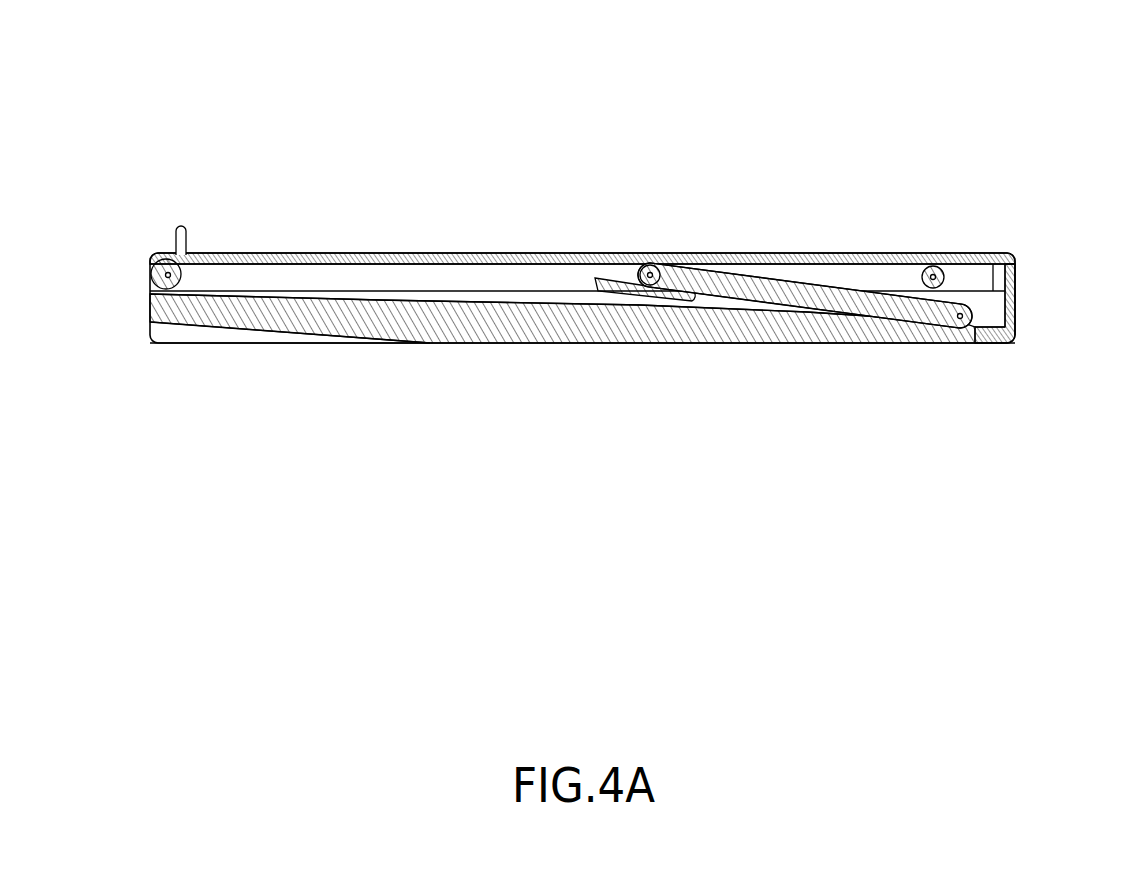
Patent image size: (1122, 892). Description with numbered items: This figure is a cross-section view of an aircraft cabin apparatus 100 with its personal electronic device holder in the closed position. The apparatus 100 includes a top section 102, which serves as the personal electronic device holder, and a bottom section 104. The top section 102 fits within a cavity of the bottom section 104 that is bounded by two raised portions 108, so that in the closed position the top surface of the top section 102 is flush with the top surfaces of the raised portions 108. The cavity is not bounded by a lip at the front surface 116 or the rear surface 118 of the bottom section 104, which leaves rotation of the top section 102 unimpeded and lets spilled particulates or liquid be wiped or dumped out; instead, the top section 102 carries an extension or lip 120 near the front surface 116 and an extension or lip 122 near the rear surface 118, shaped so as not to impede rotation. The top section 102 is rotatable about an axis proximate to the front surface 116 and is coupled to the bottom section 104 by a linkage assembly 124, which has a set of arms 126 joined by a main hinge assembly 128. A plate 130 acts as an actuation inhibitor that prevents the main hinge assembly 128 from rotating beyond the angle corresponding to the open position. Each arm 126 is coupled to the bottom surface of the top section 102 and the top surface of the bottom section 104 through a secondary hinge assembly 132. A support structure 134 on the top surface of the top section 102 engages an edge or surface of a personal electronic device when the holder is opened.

The apparatus 100 is at (120, 108).
The top section 102 is at (408, 218).
The bottom section 104 is at (408, 383).
The raised portions 108 is at (212, 345).
The front surface 116 is at (152, 306).
The rear surface 118 is at (1013, 340).
The extension or lip 120 is at (156, 276).
The extension or lip 122 is at (1013, 290).
The linkage assembly 124 is at (802, 288).
The arms 126 is at (834, 272).
The main hinge assembly 128 is at (622, 274).
The plate 130 is at (648, 320).
The secondary hinge assembly 132 is at (940, 266).
The support structure 134 is at (180, 226).